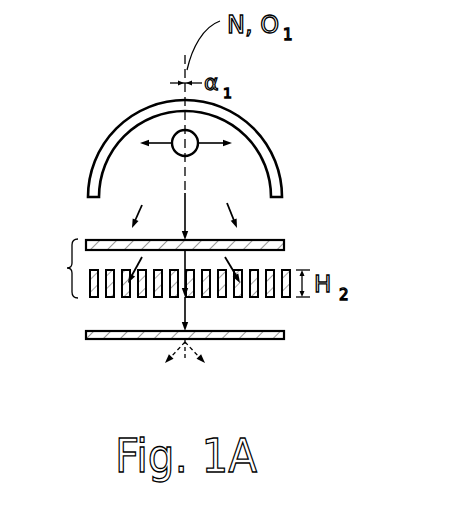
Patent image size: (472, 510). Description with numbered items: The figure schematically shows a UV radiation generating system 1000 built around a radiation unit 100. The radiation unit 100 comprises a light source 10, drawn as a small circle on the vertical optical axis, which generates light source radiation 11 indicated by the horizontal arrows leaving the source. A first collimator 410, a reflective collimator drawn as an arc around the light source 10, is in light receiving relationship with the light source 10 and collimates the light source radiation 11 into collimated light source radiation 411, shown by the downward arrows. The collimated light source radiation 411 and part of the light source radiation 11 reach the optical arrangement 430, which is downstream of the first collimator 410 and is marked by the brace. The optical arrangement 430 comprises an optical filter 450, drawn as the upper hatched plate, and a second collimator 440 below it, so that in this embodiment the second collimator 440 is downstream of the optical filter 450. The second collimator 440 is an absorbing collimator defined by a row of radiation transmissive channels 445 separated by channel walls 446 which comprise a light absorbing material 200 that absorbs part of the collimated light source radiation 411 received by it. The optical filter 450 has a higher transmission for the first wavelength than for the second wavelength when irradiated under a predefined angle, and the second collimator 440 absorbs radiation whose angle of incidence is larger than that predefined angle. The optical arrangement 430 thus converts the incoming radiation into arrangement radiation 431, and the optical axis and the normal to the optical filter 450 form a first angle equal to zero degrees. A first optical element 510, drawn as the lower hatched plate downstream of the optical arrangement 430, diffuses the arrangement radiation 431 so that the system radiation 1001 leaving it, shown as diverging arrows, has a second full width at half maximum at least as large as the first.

The radiation unit 100 is at (98, 60).
The radiation generating system 1000 is at (320, 78).
The light source 10 is at (197, 123).
The light source radiation 11 is at (160, 143).
The first collimator 410 is at (112, 131).
The collimated light source radiation 411 is at (143, 205).
The optical arrangement 430 is at (147, 330).
The arrangement radiation 431 is at (182, 298).
The second collimator 440 is at (147, 339).
The radiation transmissive channels 445 is at (147, 339).
The channel walls 446 is at (57, 345).
The light absorbing material 200 is at (92, 298).
The optical filter 450 is at (298, 248).
The first optical element 510 is at (285, 334).
The system radiation 1001 is at (187, 369).